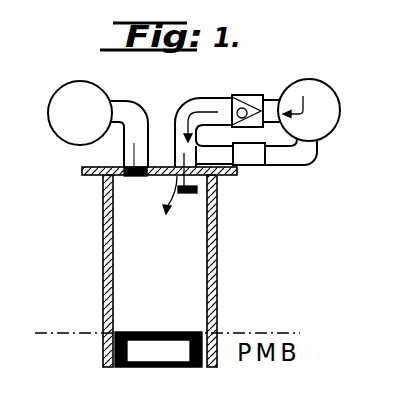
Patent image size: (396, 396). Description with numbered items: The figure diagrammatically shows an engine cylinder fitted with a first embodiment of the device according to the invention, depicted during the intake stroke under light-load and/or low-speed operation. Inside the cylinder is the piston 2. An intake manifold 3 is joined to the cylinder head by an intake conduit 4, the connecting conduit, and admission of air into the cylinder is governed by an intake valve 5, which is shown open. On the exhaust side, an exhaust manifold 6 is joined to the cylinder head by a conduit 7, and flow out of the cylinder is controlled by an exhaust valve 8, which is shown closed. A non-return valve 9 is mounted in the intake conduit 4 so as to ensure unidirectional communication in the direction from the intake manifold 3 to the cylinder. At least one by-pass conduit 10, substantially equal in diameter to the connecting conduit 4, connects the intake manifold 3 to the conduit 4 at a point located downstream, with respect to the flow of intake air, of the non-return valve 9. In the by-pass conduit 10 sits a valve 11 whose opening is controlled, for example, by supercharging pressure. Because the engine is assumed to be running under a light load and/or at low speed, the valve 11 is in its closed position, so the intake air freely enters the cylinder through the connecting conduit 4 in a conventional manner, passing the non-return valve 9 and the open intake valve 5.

The piston 2 is at (154, 332).
The intake manifold 3 is at (334, 93).
The intake conduit 4 is at (208, 110).
The intake valve 5 is at (184, 193).
The exhaust manifold 6 is at (71, 104).
The conduit 7 is at (134, 114).
The exhaust valve 8 is at (137, 177).
The non-return valve 9 is at (260, 90).
The by-pass conduit 10 is at (211, 158).
The valve 11 is at (256, 166).